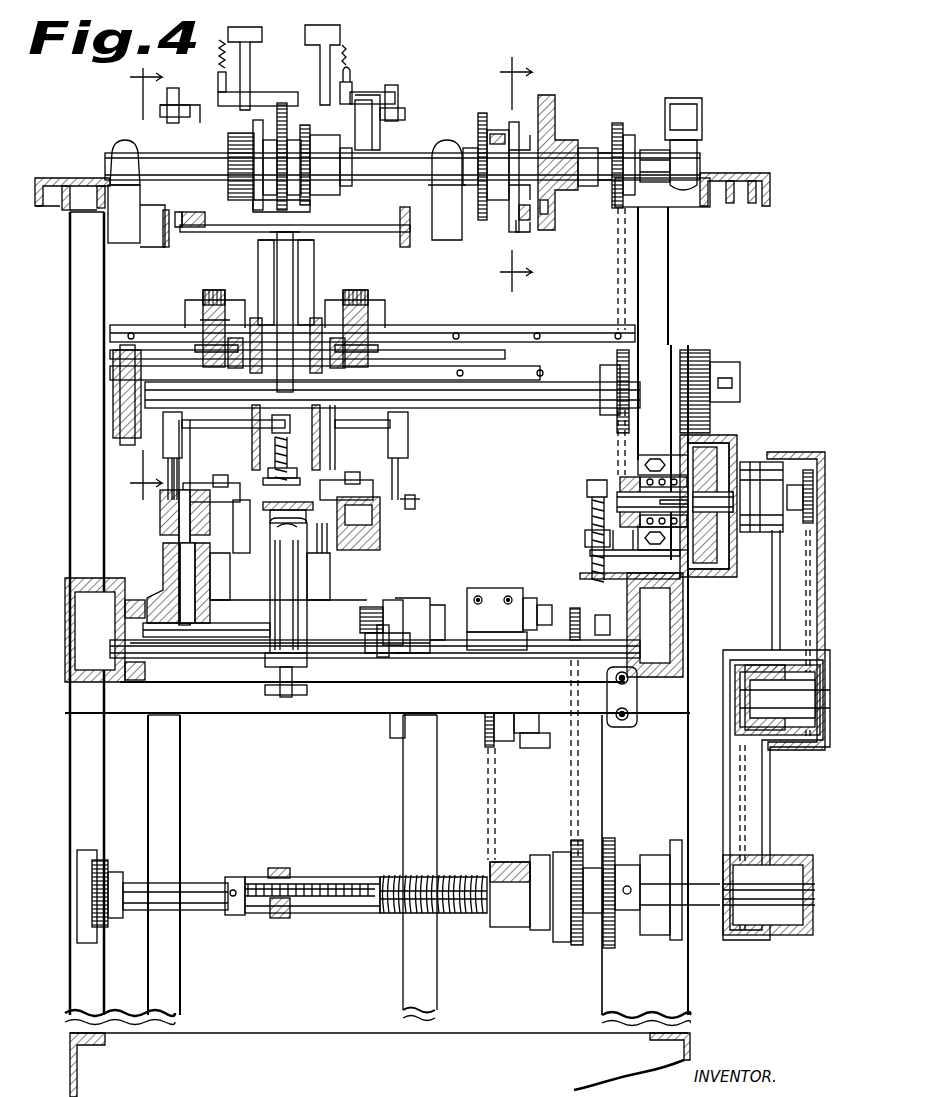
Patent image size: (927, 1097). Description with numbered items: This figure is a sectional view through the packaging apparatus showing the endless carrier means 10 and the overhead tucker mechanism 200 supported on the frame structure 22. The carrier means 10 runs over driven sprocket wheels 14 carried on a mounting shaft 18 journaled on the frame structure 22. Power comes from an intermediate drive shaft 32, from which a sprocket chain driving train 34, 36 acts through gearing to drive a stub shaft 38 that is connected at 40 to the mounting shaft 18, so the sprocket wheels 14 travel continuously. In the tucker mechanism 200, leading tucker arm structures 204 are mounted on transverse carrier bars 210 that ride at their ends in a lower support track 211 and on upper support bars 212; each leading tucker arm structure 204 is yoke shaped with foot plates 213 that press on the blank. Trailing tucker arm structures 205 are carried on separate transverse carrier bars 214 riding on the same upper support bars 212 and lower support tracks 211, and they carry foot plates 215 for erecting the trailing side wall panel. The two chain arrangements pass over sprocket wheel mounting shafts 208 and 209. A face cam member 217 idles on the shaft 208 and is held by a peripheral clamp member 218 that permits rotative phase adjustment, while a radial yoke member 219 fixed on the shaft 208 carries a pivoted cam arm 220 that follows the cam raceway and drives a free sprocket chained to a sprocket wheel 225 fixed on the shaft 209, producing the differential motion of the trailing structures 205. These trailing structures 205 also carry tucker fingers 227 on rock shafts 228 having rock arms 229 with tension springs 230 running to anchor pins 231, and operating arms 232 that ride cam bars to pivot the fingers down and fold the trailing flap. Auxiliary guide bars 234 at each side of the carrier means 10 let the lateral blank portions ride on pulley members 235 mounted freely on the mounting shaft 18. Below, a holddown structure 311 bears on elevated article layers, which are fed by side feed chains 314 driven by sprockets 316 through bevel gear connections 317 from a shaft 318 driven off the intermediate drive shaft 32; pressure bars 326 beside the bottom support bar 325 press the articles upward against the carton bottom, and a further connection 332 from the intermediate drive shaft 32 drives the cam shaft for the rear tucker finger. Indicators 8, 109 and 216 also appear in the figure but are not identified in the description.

The overhead tucker mechanism 200 is at (380, 84).
The foot plates 215 is at (262, 48).
The trailing tucker arm structures 205 is at (250, 76).
The tucker fingers 227 is at (255, 94).
The anchor pins 231 is at (342, 45).
The tension springs 230 is at (350, 52).
The rock arms 229 is at (354, 84).
The rock shafts 228 is at (377, 80).
The operating arms 232 is at (398, 100).
The upper support bars 212 is at (186, 120).
The transverse carrier bars 214 is at (253, 135).
The lower support track 211 is at (196, 228).
The transverse carrier bars 210 is at (250, 232).
The leading tucker arm structure 204 is at (300, 236).
The foot plates 213 is at (258, 268).
The sprocket wheel 225 is at (478, 118).
The radial yoke member 219 is at (505, 222).
The cam arm 220 is at (525, 224).
The peripheral clamp member 218 is at (546, 96).
The face cam member 217 is at (585, 148).
The sprocket wheel mounting shaft 208 is at (605, 126).
The sprocket wheel mounting shaft 209 is at (652, 148).
The chain 216 is at (616, 262).
The section line 8 is at (136, 284).
The endless carrier means 10 is at (499, 174).
The auxiliary guide bars 234 is at (200, 298).
The pulley members 235 is at (200, 312).
The driven sprocket wheels 14 is at (255, 318).
The mounting shaft 18 is at (530, 408).
The connection 40 is at (614, 456).
The stub shaft 38 is at (740, 460).
The sprocket chain driving train 36 is at (790, 604).
The sprocket chain driving train 34 is at (745, 790).
The holddown structure 311 is at (270, 470).
The pressure bars 326 is at (238, 482).
The bottom support bar 325 is at (292, 503).
The side feed chains 314 is at (424, 505).
The driven sprockets 316 is at (152, 540).
The bevel gear connections 317 is at (213, 553).
The shaft 318 is at (420, 600).
The chain line 109 is at (486, 808).
The connection 332 is at (570, 795).
The intermediate drive shaft 32 is at (204, 905).
The frame structure 22 is at (698, 1039).